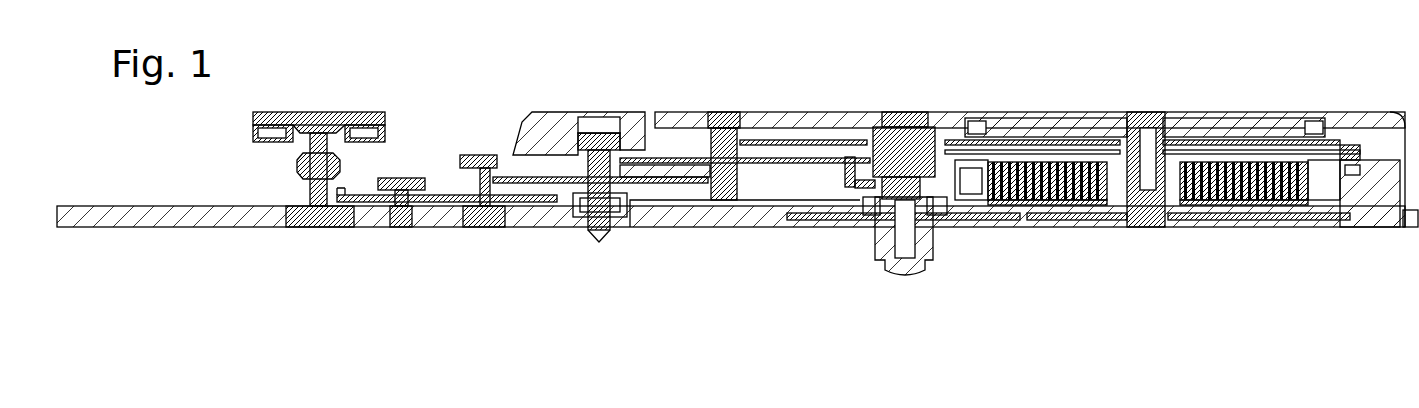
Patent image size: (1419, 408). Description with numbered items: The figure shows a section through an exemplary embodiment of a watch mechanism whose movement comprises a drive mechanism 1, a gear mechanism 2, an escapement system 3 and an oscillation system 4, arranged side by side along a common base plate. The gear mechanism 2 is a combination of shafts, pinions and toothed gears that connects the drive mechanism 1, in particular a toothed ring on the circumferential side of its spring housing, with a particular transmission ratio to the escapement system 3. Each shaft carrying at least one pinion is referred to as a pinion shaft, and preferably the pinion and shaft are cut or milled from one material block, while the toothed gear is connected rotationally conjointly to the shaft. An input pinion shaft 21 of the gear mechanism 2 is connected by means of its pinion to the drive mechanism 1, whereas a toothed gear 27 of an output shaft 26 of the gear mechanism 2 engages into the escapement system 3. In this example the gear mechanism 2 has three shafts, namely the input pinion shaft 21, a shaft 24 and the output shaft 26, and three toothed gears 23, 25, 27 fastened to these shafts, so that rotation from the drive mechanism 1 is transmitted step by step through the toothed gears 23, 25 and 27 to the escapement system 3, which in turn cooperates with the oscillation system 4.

The drive mechanism 1 is at (1107, 274).
The gear mechanism 2 is at (700, 262).
The escapement system 3 is at (434, 256).
The oscillation system 4 is at (282, 264).
The input pinion shaft 21 is at (903, 125).
The toothed gear 23 is at (845, 145).
The shaft 24 is at (722, 128).
The toothed gear 25 is at (787, 163).
The output shaft 26 is at (600, 150).
The toothed gear 27 is at (532, 185).